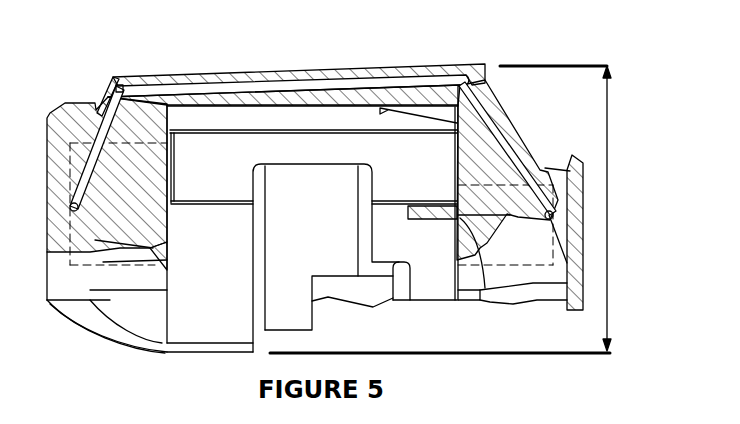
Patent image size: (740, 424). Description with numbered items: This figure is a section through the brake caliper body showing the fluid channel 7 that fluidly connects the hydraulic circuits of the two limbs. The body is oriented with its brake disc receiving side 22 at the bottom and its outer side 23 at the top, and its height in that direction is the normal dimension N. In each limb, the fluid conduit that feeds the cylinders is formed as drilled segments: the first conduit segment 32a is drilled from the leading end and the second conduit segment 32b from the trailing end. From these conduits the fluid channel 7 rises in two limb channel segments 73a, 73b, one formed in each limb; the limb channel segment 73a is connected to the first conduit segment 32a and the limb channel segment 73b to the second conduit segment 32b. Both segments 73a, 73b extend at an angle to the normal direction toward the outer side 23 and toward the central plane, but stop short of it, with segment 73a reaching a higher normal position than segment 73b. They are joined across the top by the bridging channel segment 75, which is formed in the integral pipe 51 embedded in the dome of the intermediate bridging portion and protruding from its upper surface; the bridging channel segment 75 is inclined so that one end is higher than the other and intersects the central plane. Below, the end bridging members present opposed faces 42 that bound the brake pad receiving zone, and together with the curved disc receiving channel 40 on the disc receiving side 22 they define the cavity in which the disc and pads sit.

The fluid channel 7 is at (197, 92).
The brake disc receiving side 22 is at (188, 396).
The outer side 23 is at (158, 40).
The first conduit segment 32a is at (546, 218).
The second conduit segment 32b is at (80, 208).
The disc receiving channel 40 is at (330, 231).
The opposed faces 42 is at (425, 177).
The integral pipe 51 is at (418, 63).
The limb channel segment 73a is at (510, 150).
The limb channel segment 73b is at (103, 127).
The bridging channel segment 75 is at (327, 82).
The normal dimension N is at (455, 209).